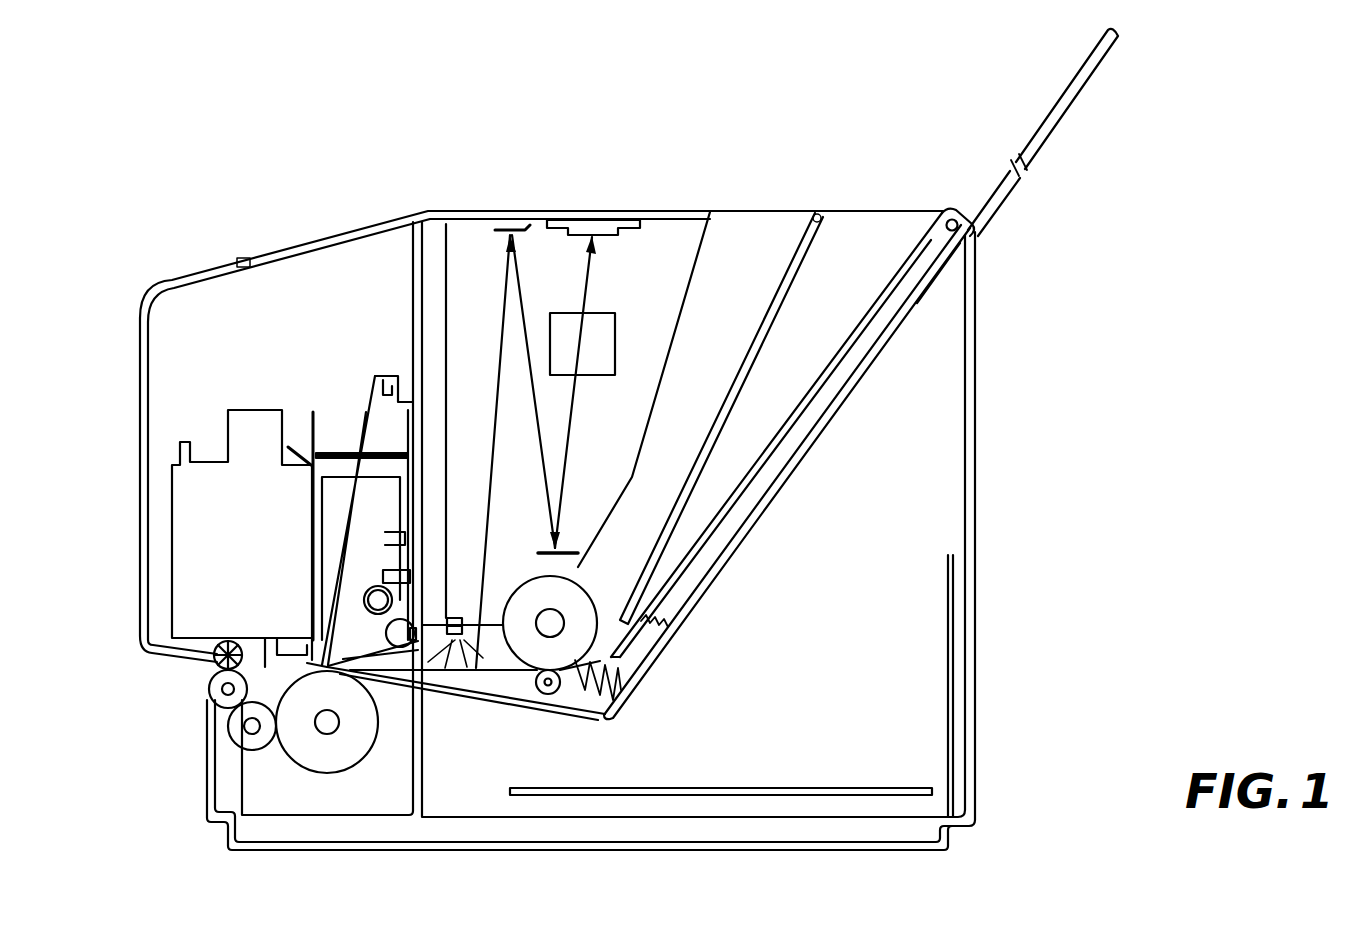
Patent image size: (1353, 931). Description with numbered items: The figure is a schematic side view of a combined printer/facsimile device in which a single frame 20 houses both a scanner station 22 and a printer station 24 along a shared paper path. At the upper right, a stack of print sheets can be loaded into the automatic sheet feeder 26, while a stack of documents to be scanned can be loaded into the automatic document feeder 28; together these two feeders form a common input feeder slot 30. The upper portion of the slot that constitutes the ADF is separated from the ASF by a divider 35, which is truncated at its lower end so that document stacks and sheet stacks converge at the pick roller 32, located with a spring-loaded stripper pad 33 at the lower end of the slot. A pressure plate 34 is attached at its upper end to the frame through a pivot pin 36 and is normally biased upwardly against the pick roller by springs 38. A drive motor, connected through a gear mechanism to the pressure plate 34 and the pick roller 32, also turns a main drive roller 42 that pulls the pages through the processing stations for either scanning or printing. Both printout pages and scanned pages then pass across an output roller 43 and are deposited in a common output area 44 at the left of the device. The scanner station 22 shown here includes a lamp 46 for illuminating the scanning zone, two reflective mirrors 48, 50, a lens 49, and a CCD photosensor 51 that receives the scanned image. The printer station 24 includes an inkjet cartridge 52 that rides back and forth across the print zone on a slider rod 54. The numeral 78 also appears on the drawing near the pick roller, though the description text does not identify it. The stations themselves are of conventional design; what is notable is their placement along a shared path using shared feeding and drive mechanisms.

The frame 20 is at (975, 372).
The scanner station 22 is at (666, 246).
The printer station 24 is at (197, 368).
The automatic sheet feeder (ASF) 26 is at (902, 186).
The automatic document feeder (ADF) 28 is at (770, 190).
The common input feeder slot 30 is at (770, 500).
The pick roller 32 is at (547, 578).
The spring-loaded stripper pad 33 is at (572, 693).
The pressure plate 34 is at (733, 530).
The divider 35 is at (723, 415).
The pivot pin 36 is at (953, 216).
The springs 38 is at (683, 588).
The main drive roller 42 is at (327, 773).
The output roller 43 is at (205, 700).
The common output area 44 is at (120, 670).
The lamp 46 is at (458, 617).
The reflective mirror 48 is at (497, 232).
The lens 49 is at (598, 367).
The reflective mirror 50 is at (568, 550).
The CCD photosensor 51 is at (610, 234).
The inkjet cartridge 52 is at (275, 522).
The slider rod 54 is at (378, 590).
The roller shaft 78 is at (540, 625).